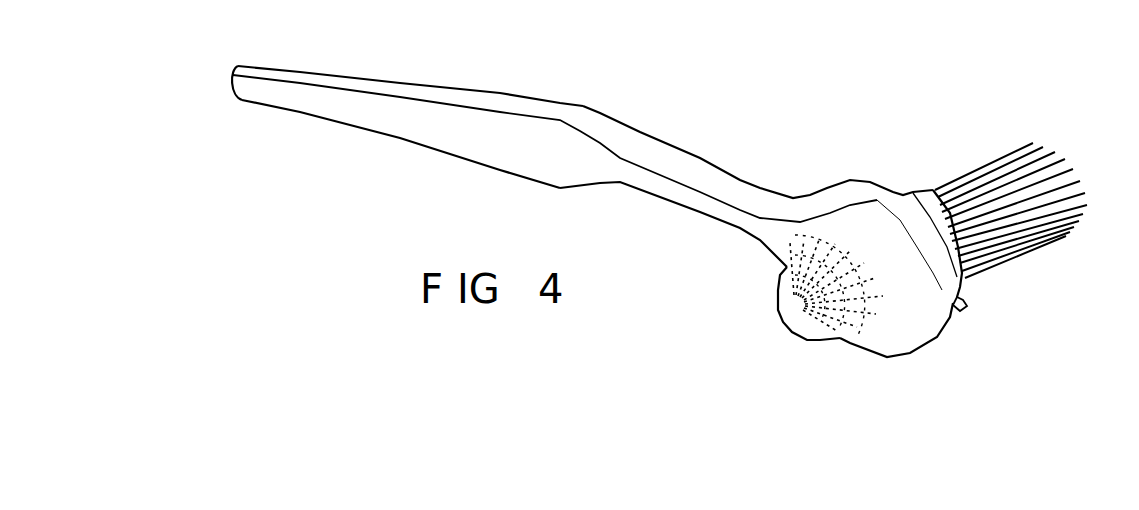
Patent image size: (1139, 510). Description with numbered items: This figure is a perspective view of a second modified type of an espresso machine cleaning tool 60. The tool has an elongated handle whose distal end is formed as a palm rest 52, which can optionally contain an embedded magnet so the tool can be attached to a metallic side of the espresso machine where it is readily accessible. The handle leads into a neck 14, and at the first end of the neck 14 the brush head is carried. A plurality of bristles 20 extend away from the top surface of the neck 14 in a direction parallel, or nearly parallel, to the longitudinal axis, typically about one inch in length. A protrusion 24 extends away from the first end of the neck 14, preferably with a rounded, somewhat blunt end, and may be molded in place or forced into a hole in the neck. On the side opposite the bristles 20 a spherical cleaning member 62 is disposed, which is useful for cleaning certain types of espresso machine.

The neck 14 is at (745, 183).
The bristles 20 is at (993, 160).
The protrusion 24 is at (965, 309).
The palm rest 52 is at (335, 138).
The second modified type of an espresso machine cleaning tool 60 is at (612, 98).
The spherical cleaning member 62 is at (787, 315).